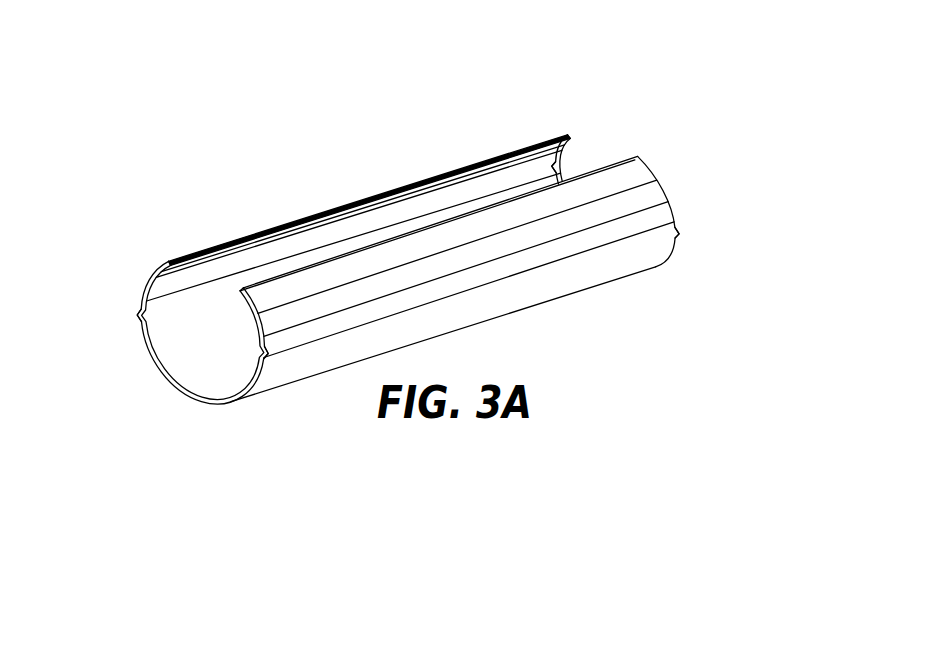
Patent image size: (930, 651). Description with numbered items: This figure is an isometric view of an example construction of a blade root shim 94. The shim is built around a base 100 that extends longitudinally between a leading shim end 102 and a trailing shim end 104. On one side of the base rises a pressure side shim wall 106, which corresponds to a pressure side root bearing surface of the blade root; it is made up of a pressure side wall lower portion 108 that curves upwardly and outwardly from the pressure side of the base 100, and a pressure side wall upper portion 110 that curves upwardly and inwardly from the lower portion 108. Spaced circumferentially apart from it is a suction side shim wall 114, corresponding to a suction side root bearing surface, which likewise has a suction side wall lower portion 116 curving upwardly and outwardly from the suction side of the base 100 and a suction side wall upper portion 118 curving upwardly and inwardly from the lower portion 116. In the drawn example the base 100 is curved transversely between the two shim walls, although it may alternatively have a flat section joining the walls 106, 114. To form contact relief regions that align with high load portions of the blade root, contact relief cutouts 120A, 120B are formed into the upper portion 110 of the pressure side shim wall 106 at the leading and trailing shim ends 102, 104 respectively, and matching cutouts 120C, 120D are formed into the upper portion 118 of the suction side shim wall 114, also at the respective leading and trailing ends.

The blade root shim 94 is at (758, 93).
The base 100 is at (216, 378).
The leading shim end 102 is at (150, 365).
The trailing shim end 104 is at (690, 230).
The pressure side shim wall 106 is at (545, 272).
The pressure side wall lower portion 108 is at (300, 362).
The pressure side wall upper portion 110 is at (630, 201).
The suction side shim wall 114 is at (331, 198).
The suction side wall lower portion 116 is at (170, 313).
The suction side wall upper portion 118 is at (493, 158).
The pressure side contact relief cutout 120A is at (267, 339).
The pressure side contact relief cutout 120B is at (667, 190).
The suction side relief cutout 120C is at (145, 297).
The suction side relief cutout 120D is at (556, 166).